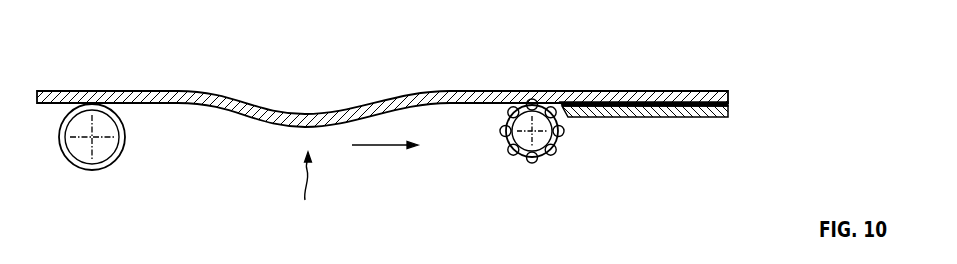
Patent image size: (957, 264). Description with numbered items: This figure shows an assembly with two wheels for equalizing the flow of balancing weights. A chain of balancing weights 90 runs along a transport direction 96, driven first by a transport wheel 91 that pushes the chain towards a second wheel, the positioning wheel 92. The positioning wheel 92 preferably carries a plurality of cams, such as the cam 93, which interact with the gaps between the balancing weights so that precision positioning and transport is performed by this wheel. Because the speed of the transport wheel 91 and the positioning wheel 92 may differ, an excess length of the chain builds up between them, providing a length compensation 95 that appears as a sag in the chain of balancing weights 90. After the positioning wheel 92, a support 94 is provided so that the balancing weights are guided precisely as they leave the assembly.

The chain of balancing weights 90 is at (183, 91).
The transport wheel 91 is at (125, 137).
The positioning wheel 92 is at (501, 132).
The cam 93 is at (533, 164).
The support 94 is at (658, 118).
The length compensation 95 is at (304, 191).
The transport direction 96 is at (377, 146).